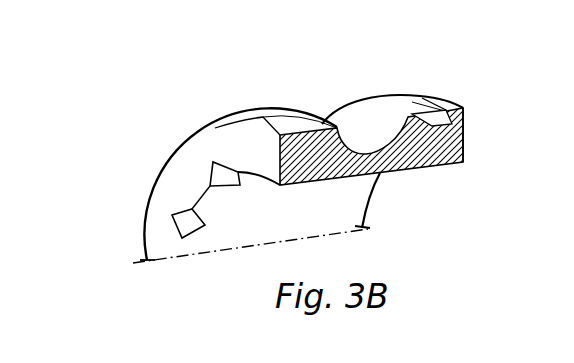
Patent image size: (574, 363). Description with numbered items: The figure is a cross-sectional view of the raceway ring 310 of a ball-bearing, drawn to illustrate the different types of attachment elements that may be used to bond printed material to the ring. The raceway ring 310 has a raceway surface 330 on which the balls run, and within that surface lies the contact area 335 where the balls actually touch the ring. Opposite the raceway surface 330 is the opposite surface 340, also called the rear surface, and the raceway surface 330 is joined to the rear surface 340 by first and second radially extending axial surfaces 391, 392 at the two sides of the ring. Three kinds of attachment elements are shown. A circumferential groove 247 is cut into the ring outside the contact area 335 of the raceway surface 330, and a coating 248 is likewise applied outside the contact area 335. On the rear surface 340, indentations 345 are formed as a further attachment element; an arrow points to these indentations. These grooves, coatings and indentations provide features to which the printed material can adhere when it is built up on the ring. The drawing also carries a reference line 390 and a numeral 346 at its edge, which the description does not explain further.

The raceway ring 310 is at (309, 168).
The coating 248 is at (292, 128).
The raceway surface 330 is at (379, 91).
The second radially extending axial surface 392 is at (465, 128).
The circumferential groove 247 is at (463, 160).
The contact area 335 is at (402, 172).
The opposite surface 340 is at (348, 195).
The indentations 345 is at (194, 239).
The connector 346 is at (561, 38).
The base line 390 is at (180, 248).
The first radially extending axial surface 391 is at (280, 150).